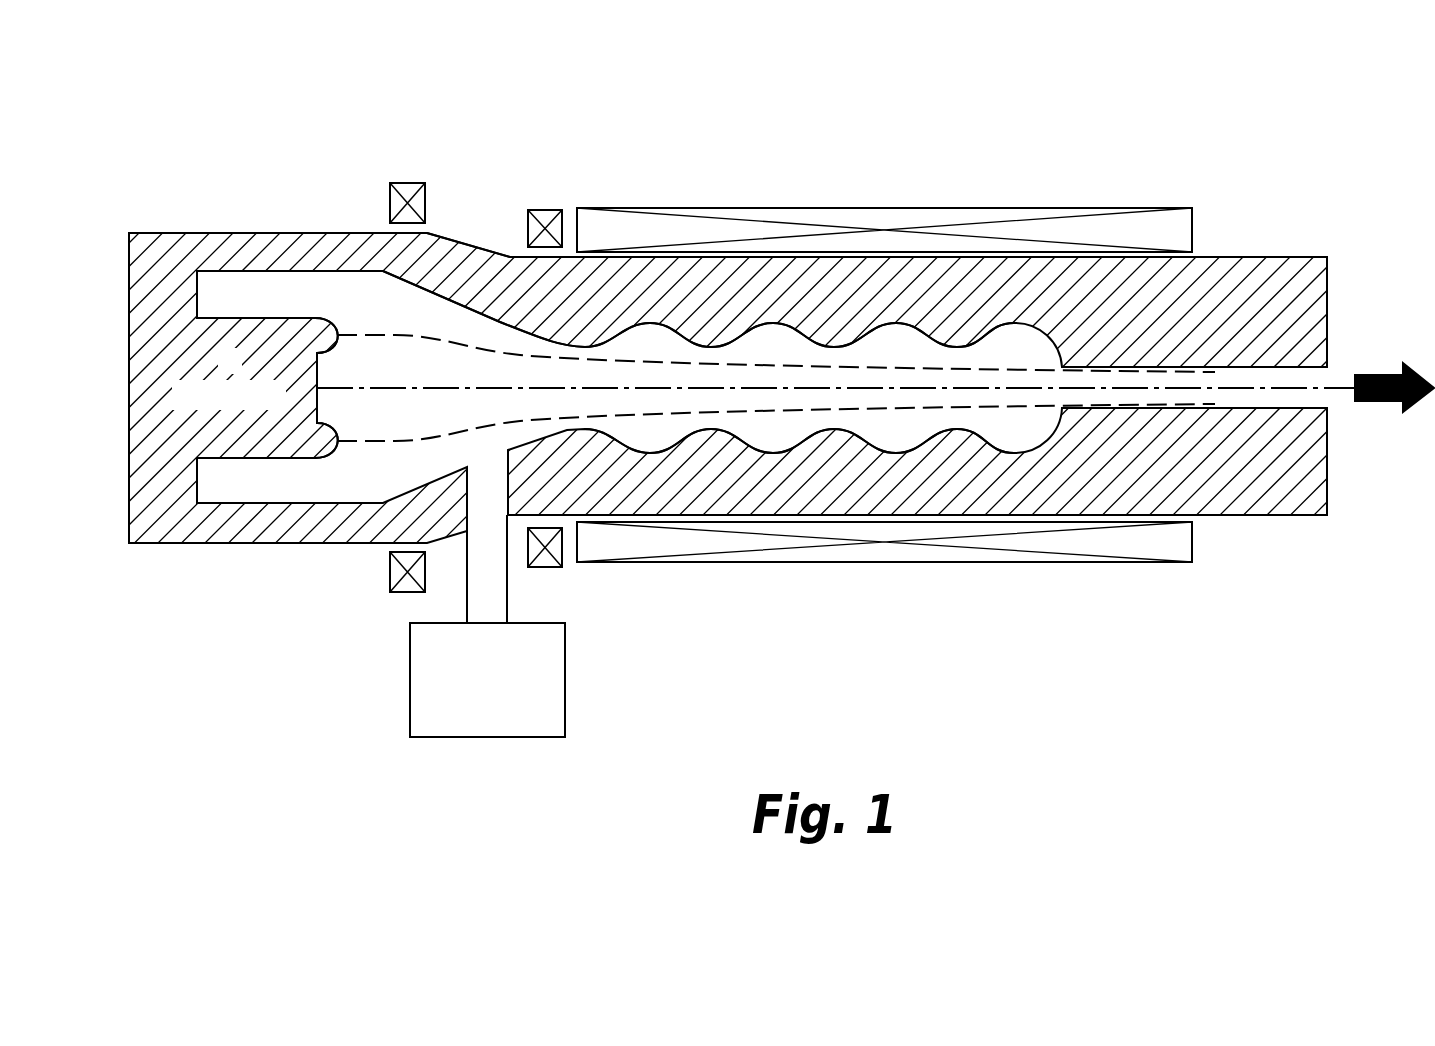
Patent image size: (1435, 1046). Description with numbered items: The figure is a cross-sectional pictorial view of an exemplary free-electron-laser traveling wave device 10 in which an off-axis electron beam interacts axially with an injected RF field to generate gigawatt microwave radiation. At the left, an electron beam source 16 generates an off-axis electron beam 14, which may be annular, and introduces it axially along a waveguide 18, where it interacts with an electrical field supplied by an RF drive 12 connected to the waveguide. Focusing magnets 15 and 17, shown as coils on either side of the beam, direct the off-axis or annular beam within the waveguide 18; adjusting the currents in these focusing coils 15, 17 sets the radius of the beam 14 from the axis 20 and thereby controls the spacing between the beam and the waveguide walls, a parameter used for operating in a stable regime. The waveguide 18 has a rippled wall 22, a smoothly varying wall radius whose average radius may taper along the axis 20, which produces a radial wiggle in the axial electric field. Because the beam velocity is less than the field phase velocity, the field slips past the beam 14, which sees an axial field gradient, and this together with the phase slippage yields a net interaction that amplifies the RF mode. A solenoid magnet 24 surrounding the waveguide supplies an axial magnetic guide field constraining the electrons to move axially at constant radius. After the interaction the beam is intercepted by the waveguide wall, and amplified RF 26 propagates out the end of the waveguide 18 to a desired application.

The FEL device 10 is at (918, 190).
The RF drive 12 is at (460, 730).
The electron beam 14 is at (505, 352).
The focusing magnet 15 is at (407, 200).
The electron beam source 16 is at (246, 452).
The focusing magnet 17 is at (545, 228).
The waveguide 18 is at (958, 502).
The axis 20 is at (1300, 393).
The rippled wall 22 is at (770, 323).
The solenoid magnet 24 is at (1140, 222).
The amplified RF 26 is at (1410, 335).